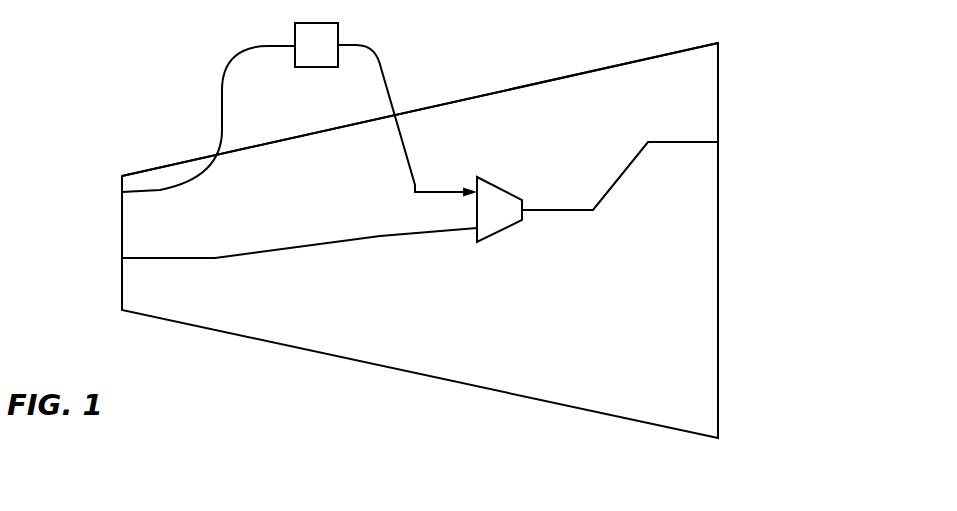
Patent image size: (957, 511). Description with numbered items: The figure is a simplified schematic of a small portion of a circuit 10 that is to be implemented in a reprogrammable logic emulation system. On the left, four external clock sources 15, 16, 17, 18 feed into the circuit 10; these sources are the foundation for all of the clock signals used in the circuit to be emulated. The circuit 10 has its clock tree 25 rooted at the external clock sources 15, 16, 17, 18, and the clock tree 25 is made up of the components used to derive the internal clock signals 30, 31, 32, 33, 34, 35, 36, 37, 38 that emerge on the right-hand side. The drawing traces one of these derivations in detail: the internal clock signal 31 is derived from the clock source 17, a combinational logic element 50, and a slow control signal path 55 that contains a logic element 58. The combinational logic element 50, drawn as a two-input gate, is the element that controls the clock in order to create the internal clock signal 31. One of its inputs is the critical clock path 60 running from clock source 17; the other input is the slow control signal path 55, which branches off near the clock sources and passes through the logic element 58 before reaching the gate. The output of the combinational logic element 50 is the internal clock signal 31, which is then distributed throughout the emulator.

The circuit 10 is at (240, 364).
The external clock source 15 is at (112, 192).
The external clock source 16 is at (112, 227).
The external clock source 17 is at (112, 258).
The external clock source 18 is at (112, 293).
The clock tree 25 is at (567, 75).
The internal clock signal 30 is at (718, 109).
The internal clock signal 31 is at (718, 142).
The internal clock signal 32 is at (718, 174).
The product stream outlet 33 is at (718, 207).
The internal clock signal 34 is at (718, 241).
The internal clock signal 35 is at (718, 273).
The internal clock signal 36 is at (718, 307).
The internal clock signal 37 is at (718, 339).
The internal clock signal 38 is at (718, 372).
The combinational logic element 50 is at (502, 183).
The slow control signal path 55 is at (384, 75).
The logic element 58 is at (295, 31).
The critical clock path 60 is at (352, 239).